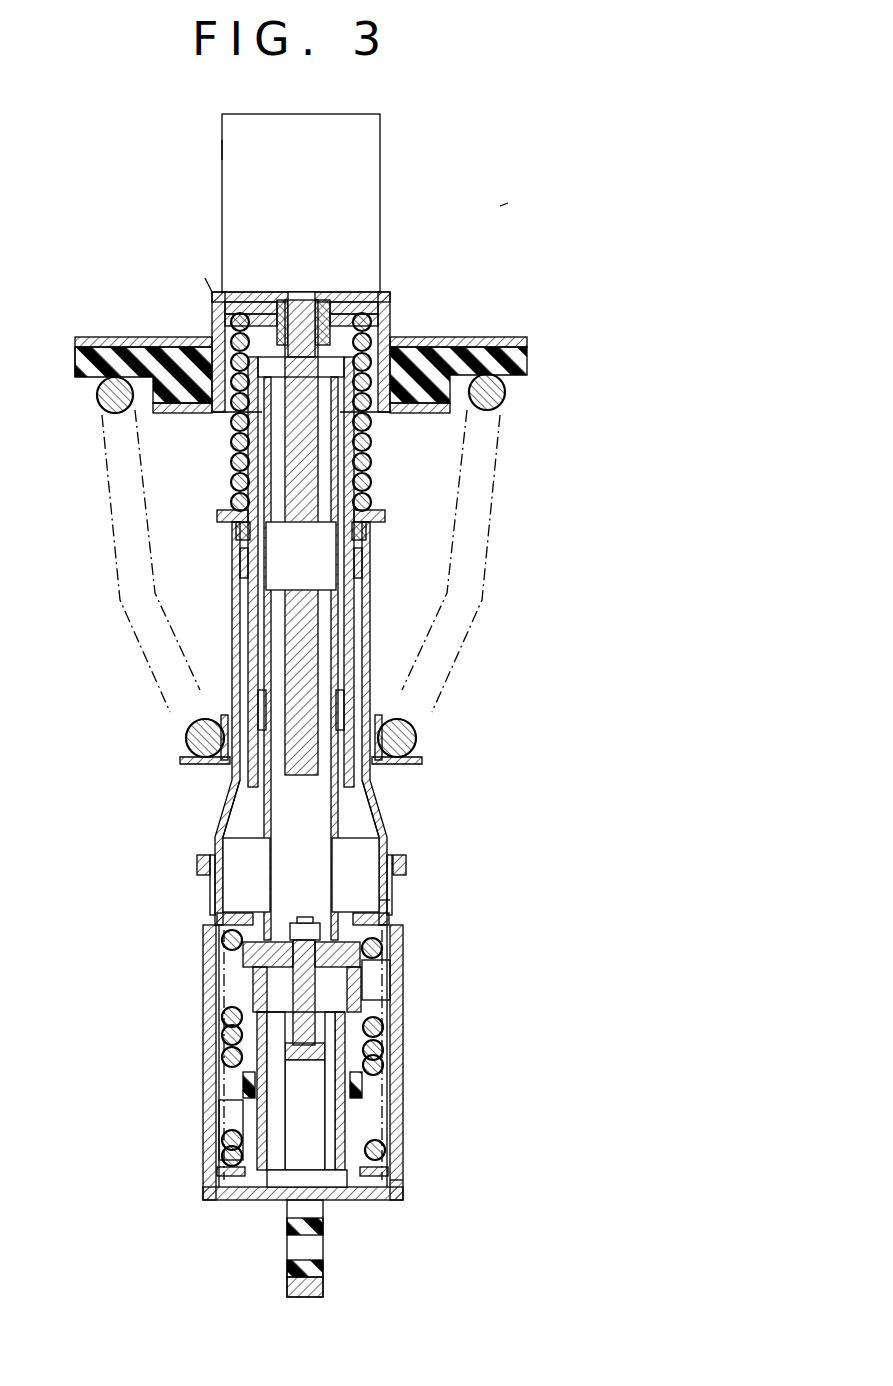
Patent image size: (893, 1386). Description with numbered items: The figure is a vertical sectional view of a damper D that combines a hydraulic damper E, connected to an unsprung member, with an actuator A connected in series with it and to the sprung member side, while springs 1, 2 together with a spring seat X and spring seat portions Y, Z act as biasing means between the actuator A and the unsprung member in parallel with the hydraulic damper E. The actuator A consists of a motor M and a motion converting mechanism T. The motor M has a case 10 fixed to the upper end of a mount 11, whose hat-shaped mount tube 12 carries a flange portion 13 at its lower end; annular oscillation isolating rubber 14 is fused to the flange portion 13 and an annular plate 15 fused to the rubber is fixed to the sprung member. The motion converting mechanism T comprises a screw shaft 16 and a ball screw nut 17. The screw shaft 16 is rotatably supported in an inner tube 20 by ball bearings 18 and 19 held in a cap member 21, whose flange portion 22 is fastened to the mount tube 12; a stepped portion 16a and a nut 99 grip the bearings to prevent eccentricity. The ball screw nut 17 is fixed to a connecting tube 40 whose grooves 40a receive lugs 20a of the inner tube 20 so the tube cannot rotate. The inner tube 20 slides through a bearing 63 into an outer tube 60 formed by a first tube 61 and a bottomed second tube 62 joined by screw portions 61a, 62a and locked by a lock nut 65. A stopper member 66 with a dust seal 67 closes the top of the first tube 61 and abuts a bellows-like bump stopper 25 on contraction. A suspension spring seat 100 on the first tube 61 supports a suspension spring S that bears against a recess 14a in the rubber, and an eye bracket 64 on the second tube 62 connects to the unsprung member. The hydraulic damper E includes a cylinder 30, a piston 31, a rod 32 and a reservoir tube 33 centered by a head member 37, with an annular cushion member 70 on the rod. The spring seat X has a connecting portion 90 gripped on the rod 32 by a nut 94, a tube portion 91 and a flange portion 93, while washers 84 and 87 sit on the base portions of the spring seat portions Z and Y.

The spring 1 is at (215, 962).
The spring 2 is at (205, 1093).
The case 10 is at (222, 148).
The mount 11 is at (112, 338).
The mount tube 12 is at (385, 295).
The flange portion 13 is at (195, 413).
The oscillation isolating rubber 14 is at (527, 356).
The recess 14a is at (505, 400).
The plate 15 is at (492, 337).
The screw shaft 16 is at (320, 490).
The stepped portion 16a is at (256, 398).
The ball screw nut 17 is at (270, 600).
The ball bearing 18 is at (228, 322).
The ball bearing 19 is at (232, 302).
The inner tube 20 is at (248, 474).
The lug 20a is at (262, 700).
The cap member 21 is at (378, 325).
The flange portion 22 is at (262, 300).
The bump stopper 25 is at (372, 440).
The cylinder 30 is at (350, 1060).
The piston 31 is at (346, 1090).
The rod 32 is at (326, 990).
The reservoir tube 33 is at (272, 1190).
The head member 37 is at (347, 1005).
The connecting tube 40 is at (385, 800).
The groove 40a is at (258, 810).
The outer tube 60 is at (210, 828).
The first tube 61 is at (370, 600).
The screw portion 61a is at (198, 862).
The second tube 62 is at (207, 1200).
The screw portion 62a is at (225, 915).
The bearing 63 is at (362, 565).
The eye bracket 64 is at (325, 1272).
The lock nut 65 is at (212, 880).
The stopper member 66 is at (217, 516).
The dust seal 67 is at (244, 532).
The cushion member 70 is at (243, 1065).
The washer 84 is at (217, 1170).
The washer 87 is at (228, 938).
The connecting portion 90 is at (395, 935).
The tube portion 91 is at (245, 985).
The flange portion 93 is at (383, 1035).
The nut 94 is at (305, 922).
The nut 99 is at (345, 290).
The suspension spring seat 100 is at (422, 760).
The actuator A is at (205, 280).
The damper D is at (505, 205).
The hydraulic damper E is at (430, 964).
The motor M is at (382, 180).
The suspension spring S is at (122, 584).
The motion converting mechanism T is at (338, 474).
The spring seat X is at (215, 1043).
The spring seat portion Y is at (385, 905).
The spring seat portion Z is at (395, 1180).